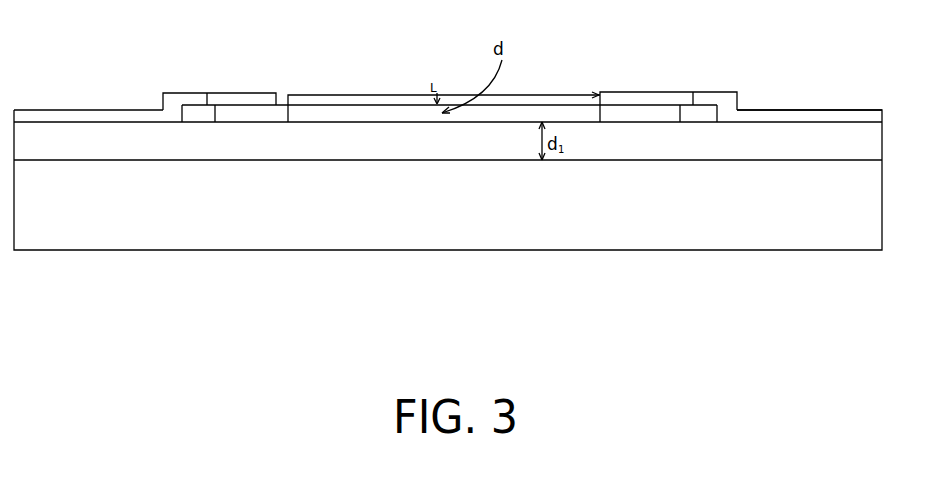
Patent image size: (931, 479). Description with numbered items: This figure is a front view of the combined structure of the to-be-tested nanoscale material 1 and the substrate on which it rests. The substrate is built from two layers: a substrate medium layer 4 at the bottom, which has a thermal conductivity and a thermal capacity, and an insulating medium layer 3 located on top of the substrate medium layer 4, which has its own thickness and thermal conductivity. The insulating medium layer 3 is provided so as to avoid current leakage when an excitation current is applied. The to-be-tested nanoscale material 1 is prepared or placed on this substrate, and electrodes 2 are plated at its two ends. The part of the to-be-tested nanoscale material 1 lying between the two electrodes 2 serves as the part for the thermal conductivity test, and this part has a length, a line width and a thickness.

The to-be-tested nanoscale material 1 is at (532, 115).
The electrode 2 is at (665, 100).
The insulating medium layer 3 is at (478, 147).
The substrate medium layer 4 is at (302, 205).